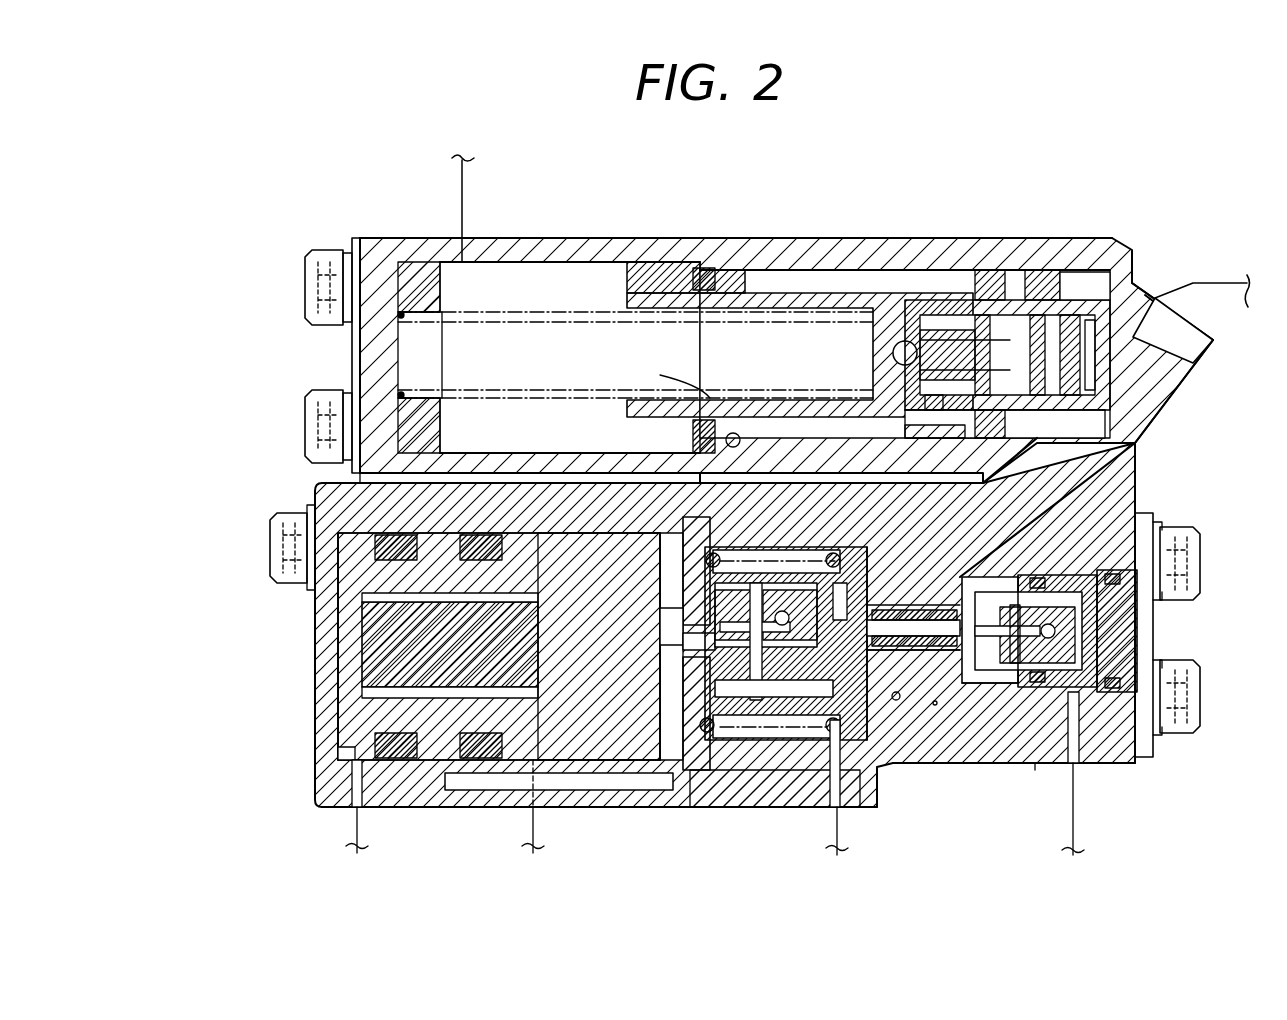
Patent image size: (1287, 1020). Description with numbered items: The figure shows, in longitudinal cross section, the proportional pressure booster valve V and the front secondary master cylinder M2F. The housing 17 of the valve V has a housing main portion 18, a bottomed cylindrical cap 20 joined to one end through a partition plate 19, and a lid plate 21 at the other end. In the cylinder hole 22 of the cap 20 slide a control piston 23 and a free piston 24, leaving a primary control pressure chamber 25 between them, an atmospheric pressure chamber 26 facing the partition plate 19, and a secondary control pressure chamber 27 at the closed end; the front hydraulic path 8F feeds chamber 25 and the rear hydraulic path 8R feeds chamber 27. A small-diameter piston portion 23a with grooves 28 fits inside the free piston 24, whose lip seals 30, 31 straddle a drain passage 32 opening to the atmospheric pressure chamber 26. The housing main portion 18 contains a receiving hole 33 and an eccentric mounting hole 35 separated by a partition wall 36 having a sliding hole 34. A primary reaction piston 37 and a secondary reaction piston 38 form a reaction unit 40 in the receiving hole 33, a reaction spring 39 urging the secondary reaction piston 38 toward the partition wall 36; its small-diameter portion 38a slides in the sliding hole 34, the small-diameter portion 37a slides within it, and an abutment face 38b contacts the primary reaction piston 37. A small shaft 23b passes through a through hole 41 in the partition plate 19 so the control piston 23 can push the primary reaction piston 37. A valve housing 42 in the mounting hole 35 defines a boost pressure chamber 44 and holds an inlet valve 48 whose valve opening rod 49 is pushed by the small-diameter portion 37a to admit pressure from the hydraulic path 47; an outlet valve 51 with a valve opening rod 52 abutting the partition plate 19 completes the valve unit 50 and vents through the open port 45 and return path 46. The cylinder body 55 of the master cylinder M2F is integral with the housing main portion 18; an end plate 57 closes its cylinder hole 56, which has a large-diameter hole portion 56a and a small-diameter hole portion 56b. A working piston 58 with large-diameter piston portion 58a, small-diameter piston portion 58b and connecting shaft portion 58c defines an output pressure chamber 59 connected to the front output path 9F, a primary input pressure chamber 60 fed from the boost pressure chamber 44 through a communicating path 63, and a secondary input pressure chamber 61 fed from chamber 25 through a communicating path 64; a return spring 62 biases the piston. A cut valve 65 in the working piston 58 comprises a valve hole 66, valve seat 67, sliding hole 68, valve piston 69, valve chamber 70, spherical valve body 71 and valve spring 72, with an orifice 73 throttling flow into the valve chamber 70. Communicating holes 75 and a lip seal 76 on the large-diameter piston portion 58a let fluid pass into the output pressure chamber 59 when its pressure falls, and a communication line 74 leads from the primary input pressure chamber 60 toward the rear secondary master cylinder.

The front secondary master cylinder M2F is at (860, 236).
The front output path 9F is at (462, 186).
The cylinder body 55 is at (745, 236).
The cylinder hole 56 is at (535, 266).
The large-diameter hole portion 56a is at (600, 274).
The small-diameter hole portion 56b is at (800, 268).
The end plate 57 is at (352, 362).
The working piston 58 is at (1035, 270).
The large-diameter piston portion 58a is at (702, 268).
The small-diameter piston portion 58b is at (1020, 270).
The connecting shaft portion 58c is at (840, 438).
The output pressure chamber 59 is at (508, 366).
The primary input pressure chamber 60 is at (1085, 290).
The secondary input pressure chamber 61 is at (760, 308).
The return spring 62 is at (405, 318).
The communicating path 63 is at (1100, 470).
The communicating path 64 is at (700, 456).
The cut valve 65 is at (930, 300).
The valve hole 66 is at (892, 355).
The valve seat 67 is at (915, 318).
The sliding hole 68 is at (1105, 387).
The valve piston 69 is at (1135, 325).
The valve chamber 70 is at (972, 300).
The spherical valve body 71 is at (895, 436).
The valve spring 72 is at (975, 440).
The orifice 73 is at (930, 434).
The communication line 74 is at (1228, 282).
The communicating holes 75 is at (720, 268).
The lip seal 76 is at (660, 380).
The housing 17 is at (730, 812).
The housing main portion 18 is at (1128, 768).
The partition plate 19 is at (683, 641).
The cap 20 is at (320, 713).
The lid plate 21 is at (1155, 640).
The cylinder hole 22 is at (345, 560).
The control piston 23 is at (640, 762).
The small-diameter piston portion 23a is at (340, 628).
The small shaft 23b is at (658, 612).
The free piston 24 is at (350, 672).
The primary control pressure chamber 25 is at (490, 646).
The atmospheric pressure chamber 26 is at (668, 715).
The secondary control pressure chamber 27 is at (338, 753).
The grooves 28 is at (437, 596).
The lip seal 30 is at (482, 758).
The lip seal 31 is at (396, 760).
The drain passage 32 is at (600, 792).
The receiving hole 33 is at (780, 772).
The sliding hole 34 is at (880, 668).
The mounting hole 35 is at (1000, 672).
The partition wall 36 is at (815, 700).
The primary reaction piston 37 is at (775, 584).
The small-diameter portion 37a is at (930, 612).
The secondary reaction piston 38 is at (862, 570).
The small-diameter portion 38a is at (935, 705).
The abutment face 38b is at (905, 705).
The reaction spring 39 is at (797, 556).
The reaction unit 40 is at (886, 598).
The through hole 41 is at (670, 633).
The valve housing 42 is at (1060, 593).
The boost pressure chamber 44 is at (975, 690).
The open port 45 is at (832, 792).
The return path 46 is at (840, 832).
The hydraulic path 47 is at (1073, 830).
The inlet valve 48 is at (1056, 633).
The valve opening rod 49 is at (1000, 600).
The valve unit 50 is at (1155, 580).
The outlet valve 51 is at (750, 640).
The valve opening rod 52 is at (702, 530).
The proportional pressure booster valve V is at (1035, 768).
The front hydraulic path 8F is at (531, 845).
The rear hydraulic path 8R is at (355, 842).